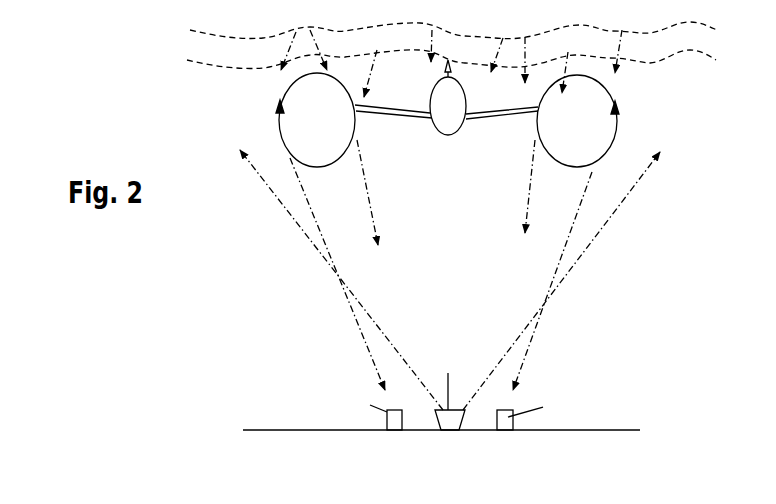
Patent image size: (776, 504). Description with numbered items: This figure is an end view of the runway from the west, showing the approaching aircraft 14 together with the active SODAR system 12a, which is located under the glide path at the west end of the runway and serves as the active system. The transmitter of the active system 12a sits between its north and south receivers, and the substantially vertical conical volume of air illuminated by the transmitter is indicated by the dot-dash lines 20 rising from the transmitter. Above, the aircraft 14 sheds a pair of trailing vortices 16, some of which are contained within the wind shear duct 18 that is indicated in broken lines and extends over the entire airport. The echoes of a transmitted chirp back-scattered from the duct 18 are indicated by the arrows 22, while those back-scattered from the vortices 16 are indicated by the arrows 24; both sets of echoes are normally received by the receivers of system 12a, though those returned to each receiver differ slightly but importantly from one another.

The first SODAR system 12a is at (480, 344).
The approaching aircraft 14 is at (454, 134).
The trailing vortices 16 is at (280, 121).
The wind shear duct 18 is at (599, 33).
The dot-dash lines 20 is at (307, 242).
The arrows 22 is at (316, 42).
The arrows 24 is at (372, 197).